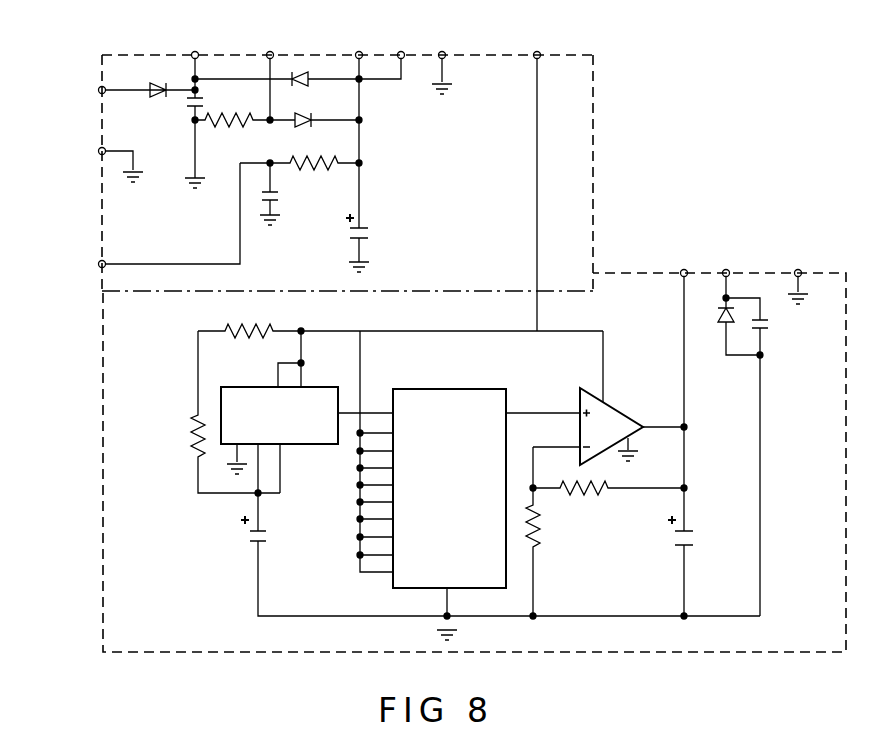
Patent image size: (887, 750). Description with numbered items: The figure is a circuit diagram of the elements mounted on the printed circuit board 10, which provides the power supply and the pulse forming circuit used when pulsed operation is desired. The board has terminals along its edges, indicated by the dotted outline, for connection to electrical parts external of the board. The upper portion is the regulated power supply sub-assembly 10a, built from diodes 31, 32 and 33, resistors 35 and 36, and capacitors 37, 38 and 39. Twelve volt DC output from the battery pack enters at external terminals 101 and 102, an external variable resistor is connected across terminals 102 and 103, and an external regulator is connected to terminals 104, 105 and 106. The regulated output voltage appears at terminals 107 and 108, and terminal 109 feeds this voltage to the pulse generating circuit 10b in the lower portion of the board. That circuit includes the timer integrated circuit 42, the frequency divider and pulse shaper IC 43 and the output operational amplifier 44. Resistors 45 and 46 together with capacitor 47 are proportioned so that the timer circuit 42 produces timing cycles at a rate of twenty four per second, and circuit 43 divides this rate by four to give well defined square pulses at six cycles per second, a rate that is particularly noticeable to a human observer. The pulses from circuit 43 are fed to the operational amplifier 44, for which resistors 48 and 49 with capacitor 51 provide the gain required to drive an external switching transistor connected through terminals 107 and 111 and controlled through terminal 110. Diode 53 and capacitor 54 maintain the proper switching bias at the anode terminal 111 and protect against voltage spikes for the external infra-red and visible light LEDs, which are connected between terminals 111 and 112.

The printed circuit board 10 is at (88, 342).
The regulated power supply sub-assembly 10a is at (95, 205).
The pulse generating circuit 10b is at (98, 418).
The diode 31 is at (153, 96).
The diode 32 is at (308, 85).
The diode 33 is at (312, 122).
The resistor 35 is at (222, 128).
The resistor 36 is at (317, 168).
The capacitor 37 is at (207, 100).
The capacitor 38 is at (263, 208).
The capacitor 39 is at (378, 234).
The timer integrated circuit 42 is at (339, 386).
The frequency divider and pulse shaper IC 43 is at (445, 389).
The output operational amplifier 44 is at (616, 407).
The resistor 45 is at (240, 335).
The resistor 46 is at (192, 445).
The capacitor 47 is at (240, 540).
The resistor 48 is at (540, 528).
The resistor 49 is at (604, 494).
The capacitor 51 is at (670, 540).
The diode 53 is at (722, 332).
The capacitor 54 is at (770, 338).
The external terminal 101 is at (100, 90).
The external terminal 102 is at (100, 160).
The PCB terminal 103 is at (148, 220).
The terminal 104 is at (200, 52).
The terminal 105 is at (276, 52).
The terminal 106 is at (365, 52).
The terminal 107 is at (400, 50).
The terminal 108 is at (447, 52).
The terminal 109 is at (543, 52).
The terminal 110 is at (681, 269).
The anode terminal 111 is at (727, 270).
The PCB terminal 112 is at (808, 270).